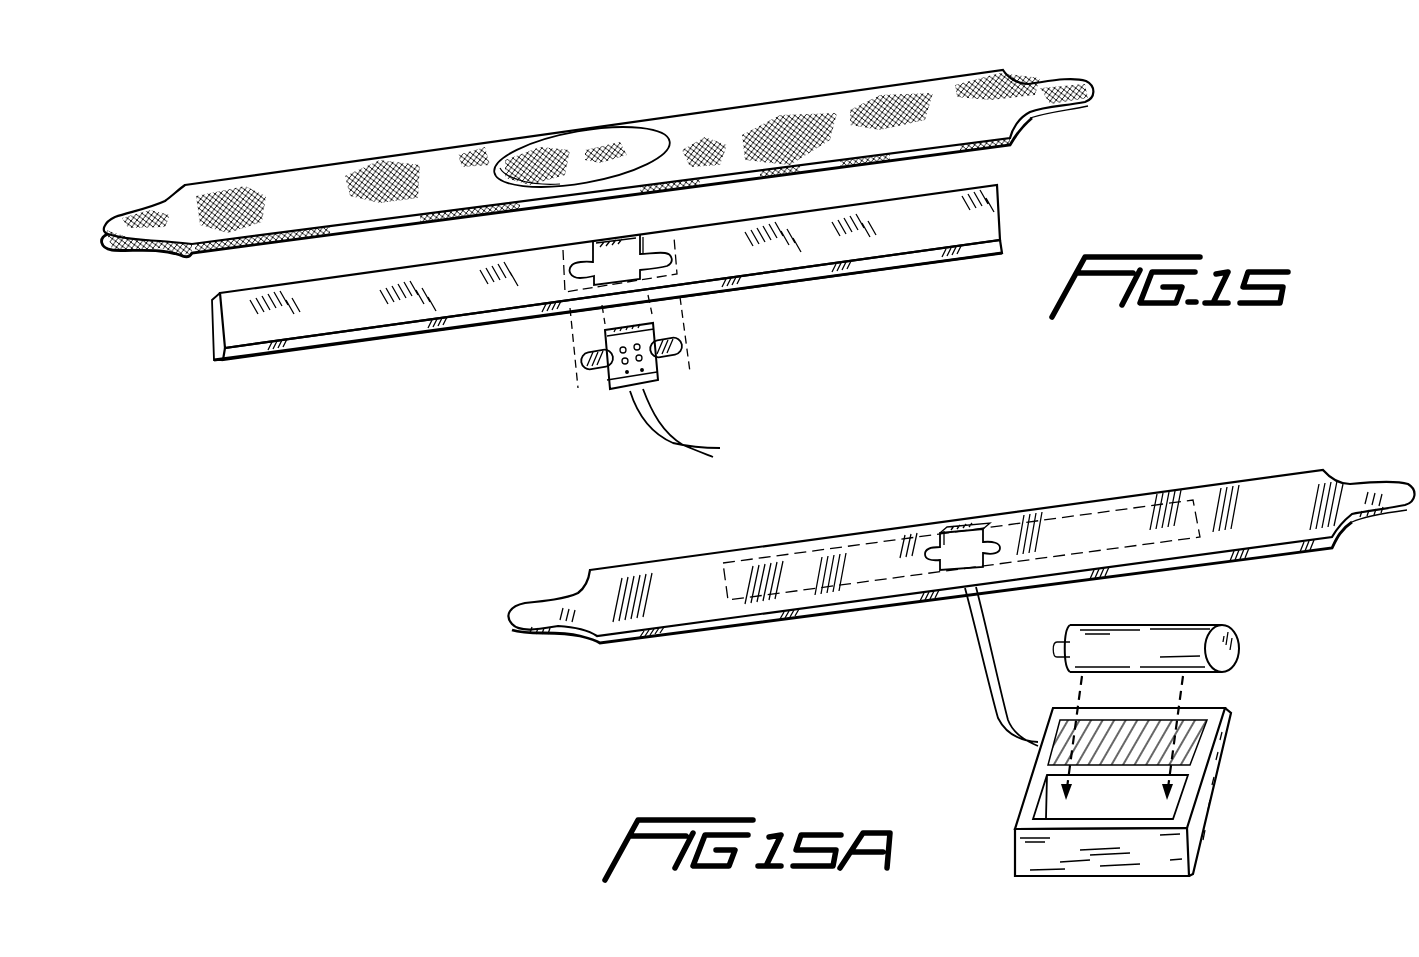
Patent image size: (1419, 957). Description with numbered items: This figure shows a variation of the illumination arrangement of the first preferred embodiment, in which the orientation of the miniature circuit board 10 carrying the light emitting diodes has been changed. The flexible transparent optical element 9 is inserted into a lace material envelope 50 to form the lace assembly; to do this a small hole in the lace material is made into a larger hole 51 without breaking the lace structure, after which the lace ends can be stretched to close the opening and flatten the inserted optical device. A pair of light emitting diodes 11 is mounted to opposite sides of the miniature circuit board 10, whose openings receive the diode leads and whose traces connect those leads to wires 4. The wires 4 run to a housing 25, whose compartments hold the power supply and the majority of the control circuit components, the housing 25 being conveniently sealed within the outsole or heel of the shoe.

In FIG. 15, the lace material envelope 50 is at (817, 97).
In FIG. 15A, the lace material envelope 50 is at (1295, 486).
In FIG. 15, the larger hole 51 is at (552, 158).
In FIG. 15, the optical element 9 is at (764, 262).
In FIG. 15A, the optical element 9 is at (1123, 522).
In FIG. 15, the miniature circuit board 10 is at (610, 392).
In FIG. 15, the light emitting diodes 11 is at (586, 364).
In FIG. 15A, the wires 4 is at (997, 720).
In FIG. 15A, the housing 25 is at (1230, 735).